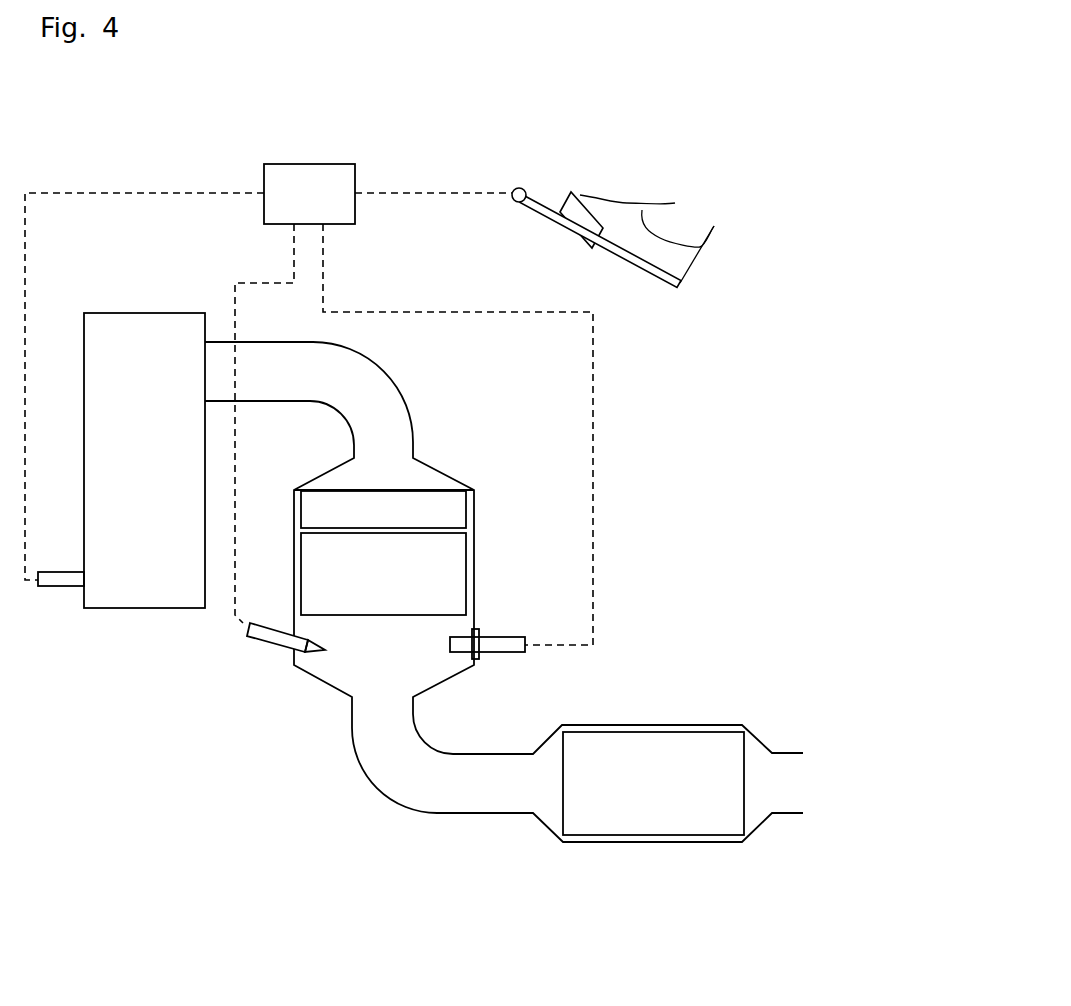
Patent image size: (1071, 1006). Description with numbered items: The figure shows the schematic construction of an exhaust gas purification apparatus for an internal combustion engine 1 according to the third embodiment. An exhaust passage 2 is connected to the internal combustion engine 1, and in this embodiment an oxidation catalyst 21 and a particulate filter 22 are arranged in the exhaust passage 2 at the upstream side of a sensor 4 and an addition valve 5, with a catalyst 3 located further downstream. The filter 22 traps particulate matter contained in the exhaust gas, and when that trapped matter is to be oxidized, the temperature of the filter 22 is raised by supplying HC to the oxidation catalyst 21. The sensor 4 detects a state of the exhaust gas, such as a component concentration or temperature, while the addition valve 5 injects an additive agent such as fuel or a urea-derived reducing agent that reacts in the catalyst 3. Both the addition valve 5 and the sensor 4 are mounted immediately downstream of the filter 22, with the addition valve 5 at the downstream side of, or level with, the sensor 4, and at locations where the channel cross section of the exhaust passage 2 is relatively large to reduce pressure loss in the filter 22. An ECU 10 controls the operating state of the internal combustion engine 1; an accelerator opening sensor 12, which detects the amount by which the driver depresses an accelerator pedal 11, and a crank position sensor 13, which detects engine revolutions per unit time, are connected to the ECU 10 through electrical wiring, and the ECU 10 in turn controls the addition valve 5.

The internal combustion engine 1 is at (112, 610).
The exhaust passage 2 is at (263, 405).
The catalyst 3 is at (645, 745).
The sensor 4 is at (510, 636).
The addition valve 5 is at (263, 647).
The ECU 10 is at (355, 208).
The accelerator pedal 11 is at (627, 252).
The accelerator opening sensor 12 is at (526, 185).
The crank position sensor 13 is at (65, 587).
The oxidation catalyst 21 is at (458, 510).
The particulate filter 22 is at (458, 555).